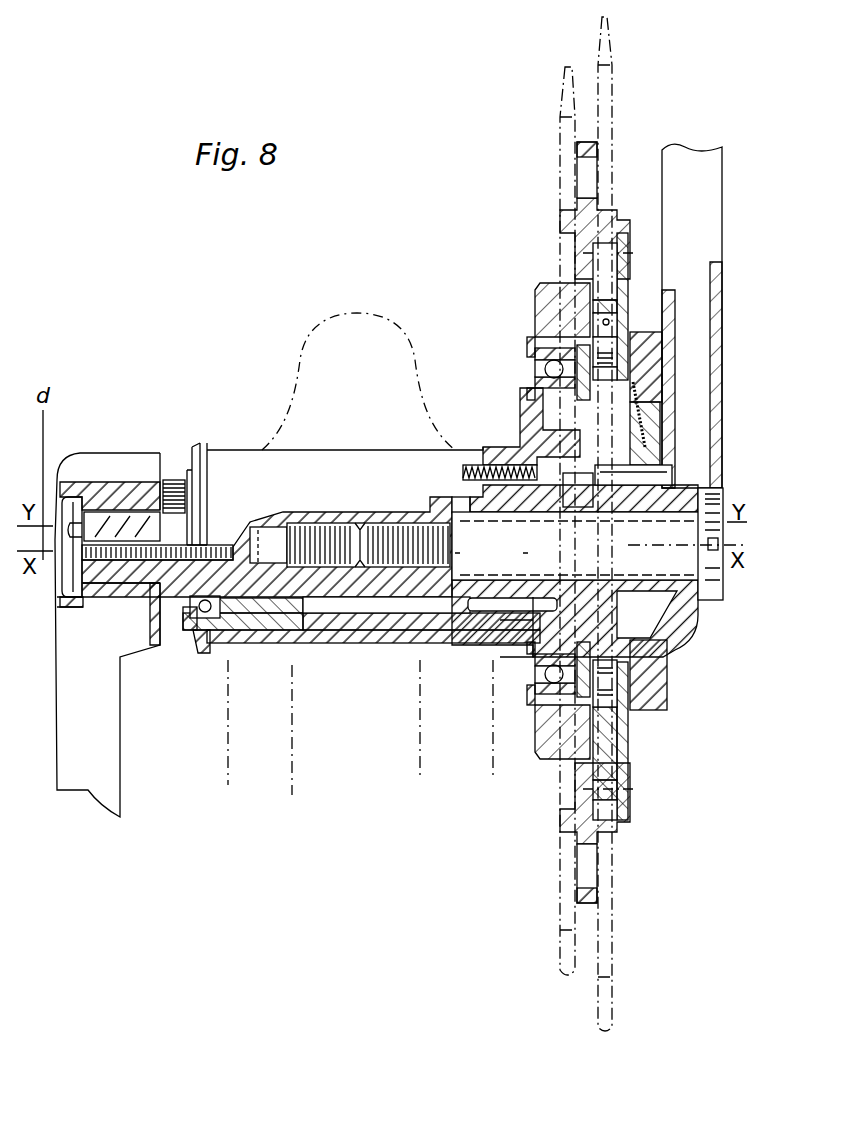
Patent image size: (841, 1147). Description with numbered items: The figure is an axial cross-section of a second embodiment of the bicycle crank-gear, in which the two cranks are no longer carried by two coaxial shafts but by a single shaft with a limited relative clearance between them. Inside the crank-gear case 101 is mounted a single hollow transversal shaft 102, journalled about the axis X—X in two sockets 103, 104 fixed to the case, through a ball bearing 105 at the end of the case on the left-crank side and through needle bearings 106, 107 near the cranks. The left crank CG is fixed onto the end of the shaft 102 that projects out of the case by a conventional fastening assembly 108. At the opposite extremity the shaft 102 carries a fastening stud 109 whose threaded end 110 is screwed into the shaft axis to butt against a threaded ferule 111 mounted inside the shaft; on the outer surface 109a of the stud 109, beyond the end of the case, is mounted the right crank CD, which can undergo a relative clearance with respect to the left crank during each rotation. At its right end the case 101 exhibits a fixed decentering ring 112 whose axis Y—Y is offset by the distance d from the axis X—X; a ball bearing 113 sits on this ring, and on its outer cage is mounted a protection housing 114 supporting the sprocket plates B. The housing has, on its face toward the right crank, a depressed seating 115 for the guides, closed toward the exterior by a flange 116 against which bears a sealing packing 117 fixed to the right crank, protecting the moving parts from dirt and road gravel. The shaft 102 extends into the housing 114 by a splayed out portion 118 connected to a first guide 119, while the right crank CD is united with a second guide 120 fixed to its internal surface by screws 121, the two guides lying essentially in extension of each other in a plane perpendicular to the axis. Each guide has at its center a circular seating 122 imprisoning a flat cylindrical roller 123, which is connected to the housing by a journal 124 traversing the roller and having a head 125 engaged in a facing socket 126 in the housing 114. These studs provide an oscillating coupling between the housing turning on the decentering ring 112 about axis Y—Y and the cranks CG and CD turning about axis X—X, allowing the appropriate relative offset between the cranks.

The crank-gear case 101 is at (357, 642).
The transversal shaft 102 is at (398, 512).
The socket 103 is at (372, 632).
The socket 104 is at (225, 648).
The ball bearing 105 is at (183, 620).
The needle bearing 106 is at (267, 606).
The needle bearing 107 is at (486, 466).
The fastening assembly 108 is at (43, 612).
The fastening stud 109 is at (587, 544).
The outer surface of stud 109a is at (652, 550).
The threaded end 110 is at (371, 523).
The threaded ferule 111 is at (328, 521).
The decentering ring 112 is at (535, 386).
The ball bearing 113 is at (533, 705).
The protection housing 114 is at (540, 285).
The depressed seating 115 is at (613, 232).
The flange 116 is at (628, 262).
The sealing packing 117 is at (640, 402).
The splayed out portion 118 is at (520, 611).
The first guide 119 is at (610, 820).
The second guide 120 is at (640, 420).
The screw 121 is at (600, 450).
The circular seating 122 is at (617, 320).
The flat cylindrical roller 123 is at (617, 380).
The journal 124 is at (617, 345).
The head 125 is at (585, 340).
The socket 126 is at (588, 325).
The sprocket plate B is at (636, 90).
The right crank CD is at (716, 140).
The left crank CG is at (107, 660).